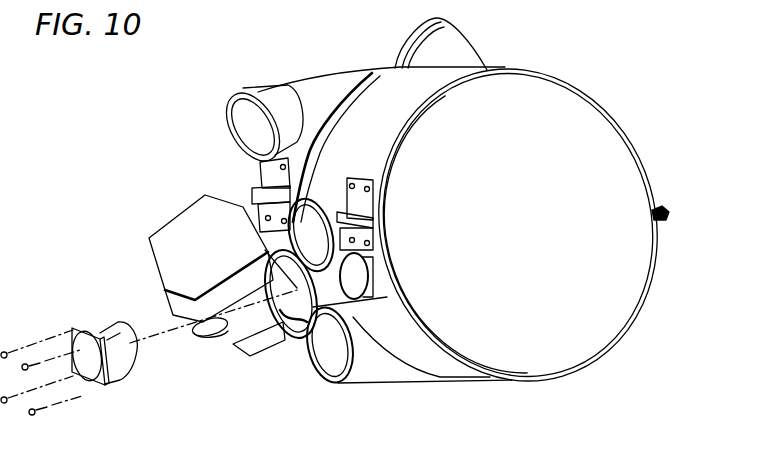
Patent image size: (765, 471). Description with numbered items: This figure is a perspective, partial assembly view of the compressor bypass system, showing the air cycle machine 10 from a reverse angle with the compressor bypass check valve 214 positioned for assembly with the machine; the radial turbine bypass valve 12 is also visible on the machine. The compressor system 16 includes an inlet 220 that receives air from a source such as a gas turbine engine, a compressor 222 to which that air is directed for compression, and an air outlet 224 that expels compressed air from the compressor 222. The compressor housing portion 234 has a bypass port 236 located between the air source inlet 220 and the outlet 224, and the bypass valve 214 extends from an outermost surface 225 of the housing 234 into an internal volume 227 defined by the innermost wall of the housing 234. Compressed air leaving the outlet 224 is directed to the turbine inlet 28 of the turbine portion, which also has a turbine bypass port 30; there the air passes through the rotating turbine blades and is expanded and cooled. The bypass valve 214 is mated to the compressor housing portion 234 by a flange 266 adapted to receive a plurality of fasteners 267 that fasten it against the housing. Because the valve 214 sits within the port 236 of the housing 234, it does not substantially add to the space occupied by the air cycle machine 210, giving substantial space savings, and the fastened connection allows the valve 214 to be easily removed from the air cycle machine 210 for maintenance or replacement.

The air cycle machine 10 is at (380, 54).
The radial turbine bypass valve 12 is at (158, 233).
The compressor system 16 is at (366, 366).
The first turbine inlet 28 is at (247, 123).
The first bypass port 30 is at (257, 227).
The air cycle machine 210 is at (578, 50).
The compressor bypass check valve 214 is at (122, 367).
The inlet 220 is at (340, 198).
The compressor 222 is at (413, 110).
The air outlet 224 is at (315, 384).
The outermost surface 225 is at (313, 338).
The internal volume 227 is at (356, 276).
The compressor housing portion 234 is at (385, 143).
The bypass port 236 is at (345, 293).
The flange 266 is at (101, 388).
The fasteners 267 is at (37, 414).